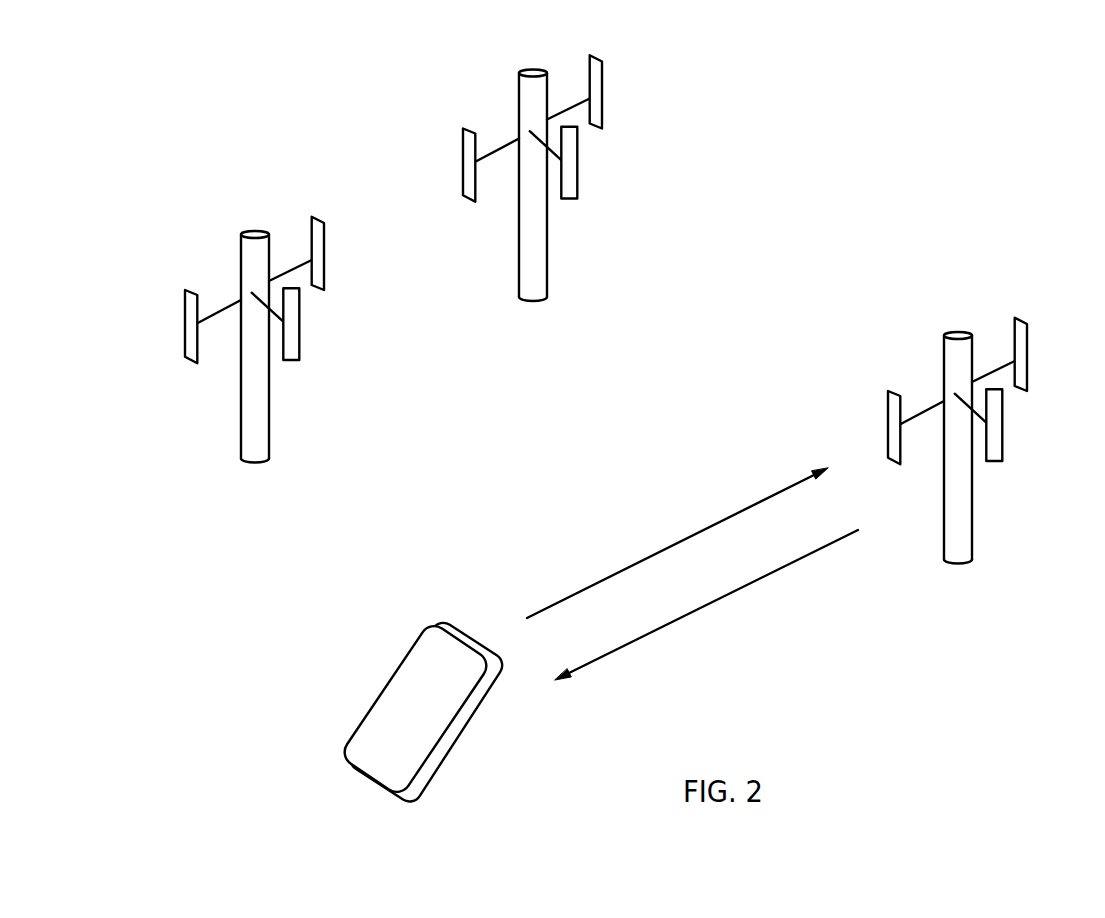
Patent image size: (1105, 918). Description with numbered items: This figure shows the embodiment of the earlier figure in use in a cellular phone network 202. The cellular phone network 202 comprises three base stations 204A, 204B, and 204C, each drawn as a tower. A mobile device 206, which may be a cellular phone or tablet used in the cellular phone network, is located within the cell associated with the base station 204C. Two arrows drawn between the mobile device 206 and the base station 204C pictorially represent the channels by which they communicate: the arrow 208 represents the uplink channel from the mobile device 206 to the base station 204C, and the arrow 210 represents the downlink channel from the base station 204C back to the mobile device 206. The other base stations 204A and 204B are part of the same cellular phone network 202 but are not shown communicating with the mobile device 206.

The cellular phone network 202 is at (690, 84).
The base station 204A is at (252, 231).
The base station 204B is at (533, 69).
The base station 204C is at (956, 332).
The mobile device 206 is at (408, 646).
The uplink channel 208 is at (671, 546).
The downlink channel 210 is at (688, 614).